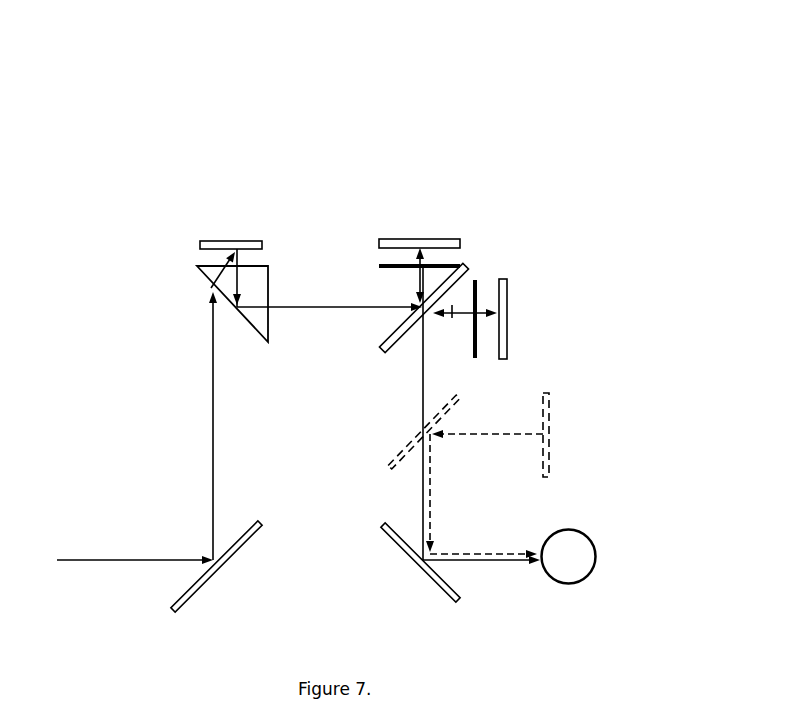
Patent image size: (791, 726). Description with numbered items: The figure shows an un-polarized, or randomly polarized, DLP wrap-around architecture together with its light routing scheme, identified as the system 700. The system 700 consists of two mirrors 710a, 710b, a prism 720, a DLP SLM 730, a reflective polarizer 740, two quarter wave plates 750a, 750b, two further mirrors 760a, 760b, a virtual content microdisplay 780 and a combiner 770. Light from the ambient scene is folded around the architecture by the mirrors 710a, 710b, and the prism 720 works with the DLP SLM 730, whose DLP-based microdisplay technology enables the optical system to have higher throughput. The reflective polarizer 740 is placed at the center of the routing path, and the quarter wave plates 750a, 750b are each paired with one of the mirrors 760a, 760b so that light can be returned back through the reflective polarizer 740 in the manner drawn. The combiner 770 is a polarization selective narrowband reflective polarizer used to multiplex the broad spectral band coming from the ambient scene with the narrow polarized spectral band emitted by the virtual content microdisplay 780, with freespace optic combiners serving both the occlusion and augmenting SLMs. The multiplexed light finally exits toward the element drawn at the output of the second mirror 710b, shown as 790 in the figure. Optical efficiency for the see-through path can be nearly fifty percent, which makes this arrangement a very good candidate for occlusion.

The system 700 is at (119, 98).
The mirror 710a is at (240, 550).
The mirror 710b is at (422, 583).
The prism 720 is at (208, 280).
The DLP SLM 730 is at (200, 242).
The reflective polarizer 740 is at (472, 270).
The quarter wave plate 750a is at (365, 260).
The quarter wave plate 750b is at (478, 285).
The mirror 760a is at (385, 238).
The mirror 760b is at (510, 345).
The combiner 770 is at (390, 465).
The virtual content microdisplay 780 is at (550, 400).
The detector 790 is at (597, 558).